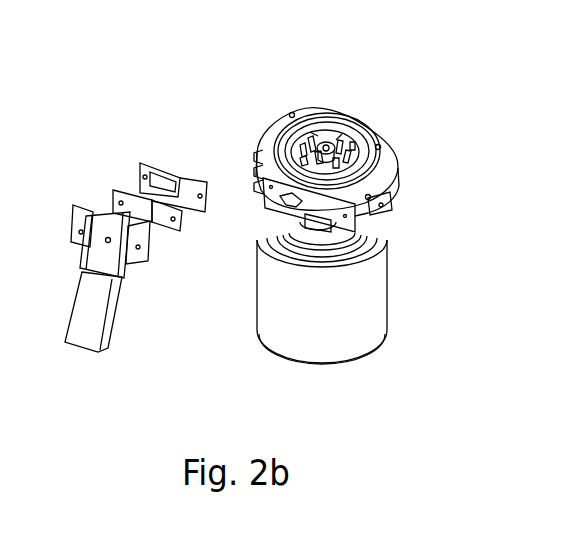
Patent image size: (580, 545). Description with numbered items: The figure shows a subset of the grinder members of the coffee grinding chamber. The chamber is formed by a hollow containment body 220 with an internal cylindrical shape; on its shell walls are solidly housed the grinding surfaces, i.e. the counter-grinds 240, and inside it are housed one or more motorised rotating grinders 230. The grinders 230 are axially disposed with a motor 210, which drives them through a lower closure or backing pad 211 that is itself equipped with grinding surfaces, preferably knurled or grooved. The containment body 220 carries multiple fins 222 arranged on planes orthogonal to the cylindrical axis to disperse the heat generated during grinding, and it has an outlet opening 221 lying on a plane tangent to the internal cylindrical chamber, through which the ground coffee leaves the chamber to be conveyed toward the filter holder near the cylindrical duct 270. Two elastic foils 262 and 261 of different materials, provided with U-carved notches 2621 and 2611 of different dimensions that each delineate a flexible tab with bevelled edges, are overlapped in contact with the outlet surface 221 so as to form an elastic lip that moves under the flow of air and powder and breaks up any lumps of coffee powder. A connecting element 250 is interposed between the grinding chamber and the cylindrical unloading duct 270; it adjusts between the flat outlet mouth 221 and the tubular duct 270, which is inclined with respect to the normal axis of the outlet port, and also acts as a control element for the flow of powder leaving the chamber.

The motor 210 is at (347, 320).
The backing pad 211 is at (318, 227).
The hollow containment body 220 is at (404, 185).
The outlet opening 221 is at (298, 203).
The fins 222 is at (253, 173).
The grinders 230 is at (328, 153).
The counter-grinds 240 is at (283, 157).
The connecting element 250 is at (63, 218).
The elastic foil 261 is at (115, 190).
The U-carved notch 2611 is at (152, 223).
The elastic foil 262 is at (148, 190).
The U-carved notch 2621 is at (180, 187).
The cylindrical duct 270 is at (90, 320).